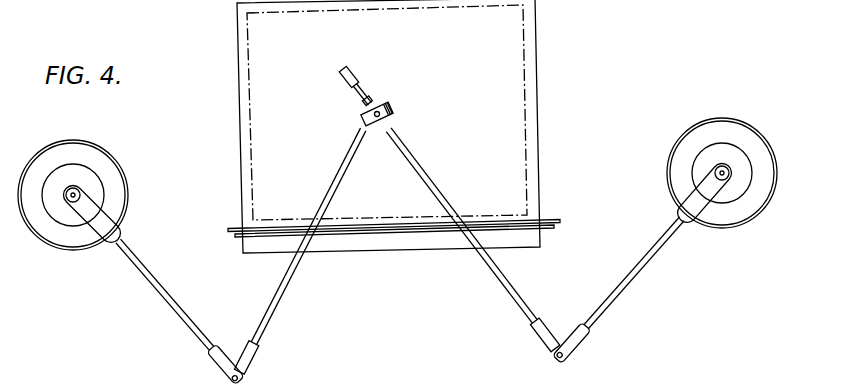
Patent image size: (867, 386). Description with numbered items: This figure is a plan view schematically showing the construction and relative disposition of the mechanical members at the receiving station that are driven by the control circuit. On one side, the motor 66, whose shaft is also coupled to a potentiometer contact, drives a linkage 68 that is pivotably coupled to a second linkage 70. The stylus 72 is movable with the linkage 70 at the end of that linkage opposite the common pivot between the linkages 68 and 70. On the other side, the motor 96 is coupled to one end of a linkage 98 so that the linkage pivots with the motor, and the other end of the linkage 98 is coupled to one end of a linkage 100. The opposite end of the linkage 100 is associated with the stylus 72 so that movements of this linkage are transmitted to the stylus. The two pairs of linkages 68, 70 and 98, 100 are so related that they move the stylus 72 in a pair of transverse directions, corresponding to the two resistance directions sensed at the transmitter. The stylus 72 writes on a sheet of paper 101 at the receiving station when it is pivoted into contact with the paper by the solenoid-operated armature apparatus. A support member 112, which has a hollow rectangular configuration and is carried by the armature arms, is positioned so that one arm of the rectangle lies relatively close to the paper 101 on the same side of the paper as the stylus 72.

The motor 66 is at (67, 237).
The linkage 68 is at (173, 310).
The second linkage 70 is at (268, 310).
The stylus 72 is at (353, 72).
The motor 96 is at (742, 227).
The linkage 98 is at (628, 278).
The linkage 100 is at (495, 277).
The sheet of paper 101 is at (523, 122).
The support member 112 is at (228, 233).